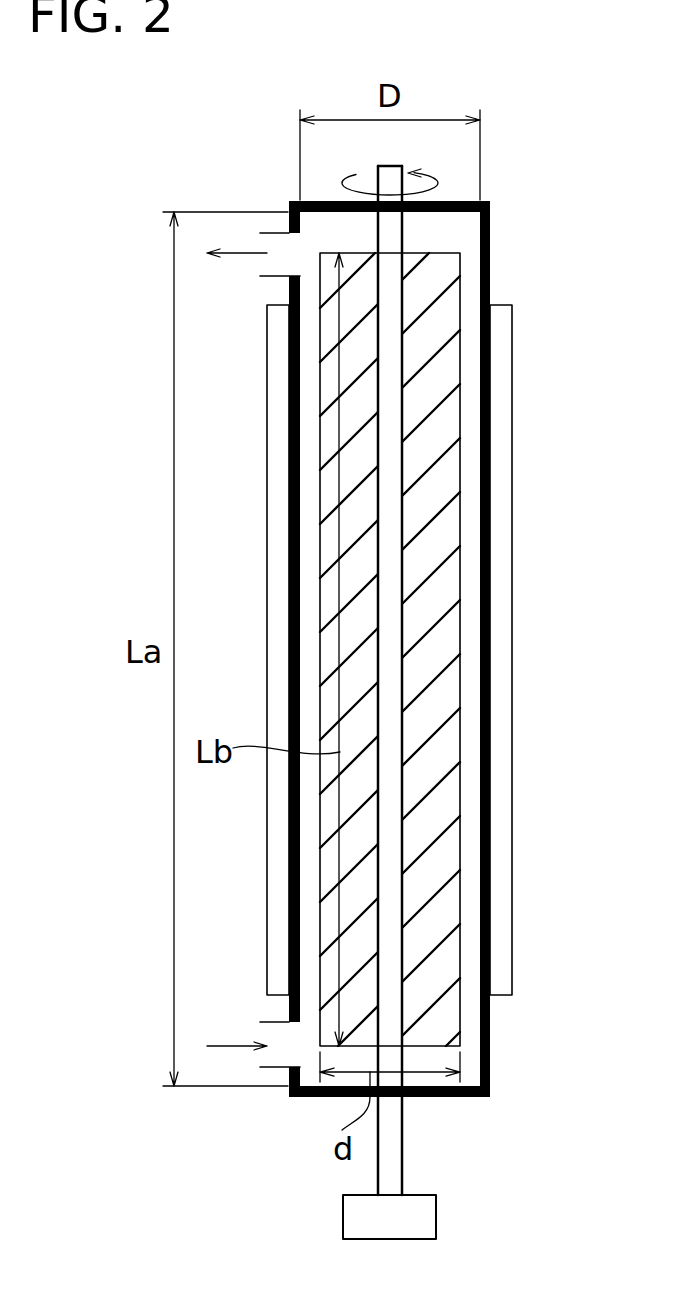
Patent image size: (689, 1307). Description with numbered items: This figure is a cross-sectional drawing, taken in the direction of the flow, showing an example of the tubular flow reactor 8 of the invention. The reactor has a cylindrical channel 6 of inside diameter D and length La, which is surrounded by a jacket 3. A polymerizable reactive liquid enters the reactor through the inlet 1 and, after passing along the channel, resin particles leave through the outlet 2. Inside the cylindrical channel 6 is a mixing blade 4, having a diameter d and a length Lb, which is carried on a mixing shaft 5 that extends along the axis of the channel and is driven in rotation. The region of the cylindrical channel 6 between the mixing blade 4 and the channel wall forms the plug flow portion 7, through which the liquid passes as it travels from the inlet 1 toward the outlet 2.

The inlet 1 is at (253, 1036).
The outlet 2 is at (253, 245).
The jacket 3 is at (512, 698).
The mixing blade 4 is at (448, 853).
The mixing shaft 5 is at (402, 1145).
The cylindrical channel 6 is at (489, 399).
The plug flow portion 7 is at (463, 530).
The tubular flow reactor 8 is at (511, 148).